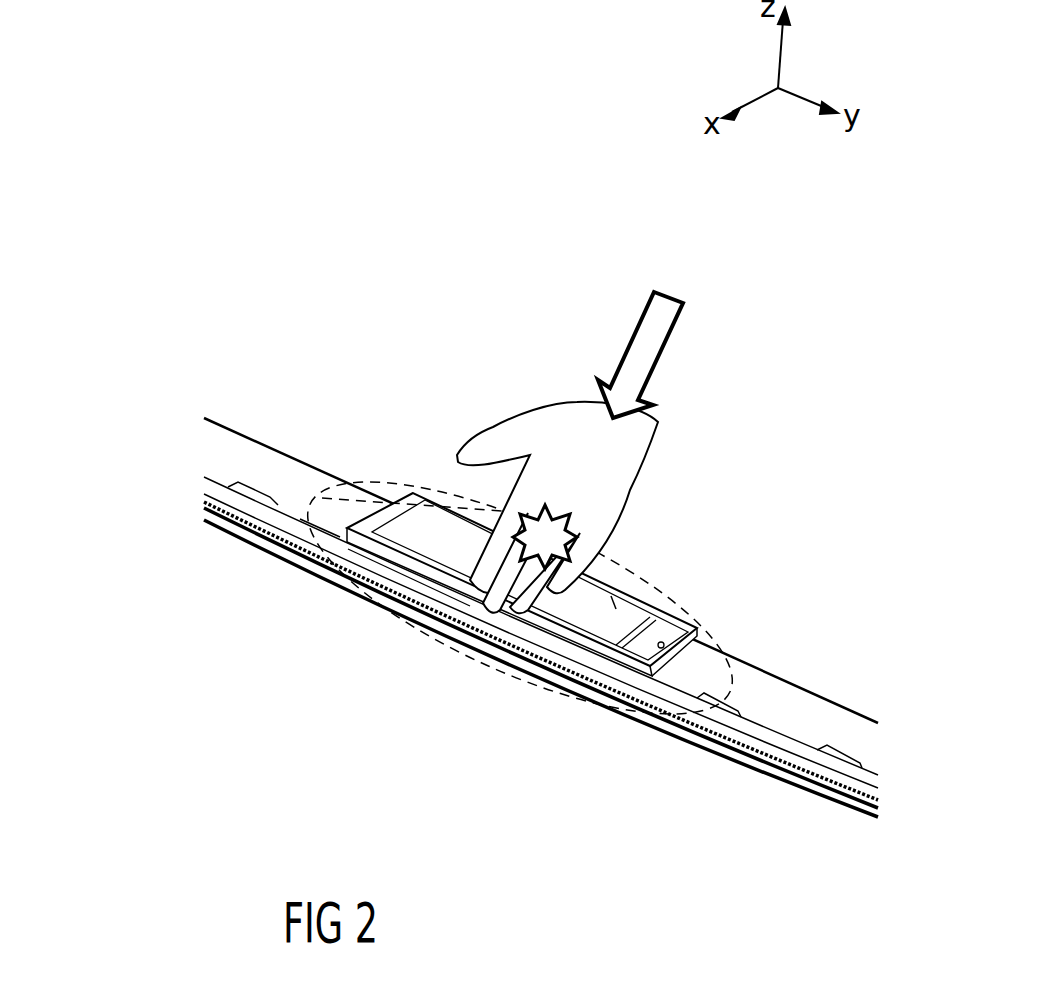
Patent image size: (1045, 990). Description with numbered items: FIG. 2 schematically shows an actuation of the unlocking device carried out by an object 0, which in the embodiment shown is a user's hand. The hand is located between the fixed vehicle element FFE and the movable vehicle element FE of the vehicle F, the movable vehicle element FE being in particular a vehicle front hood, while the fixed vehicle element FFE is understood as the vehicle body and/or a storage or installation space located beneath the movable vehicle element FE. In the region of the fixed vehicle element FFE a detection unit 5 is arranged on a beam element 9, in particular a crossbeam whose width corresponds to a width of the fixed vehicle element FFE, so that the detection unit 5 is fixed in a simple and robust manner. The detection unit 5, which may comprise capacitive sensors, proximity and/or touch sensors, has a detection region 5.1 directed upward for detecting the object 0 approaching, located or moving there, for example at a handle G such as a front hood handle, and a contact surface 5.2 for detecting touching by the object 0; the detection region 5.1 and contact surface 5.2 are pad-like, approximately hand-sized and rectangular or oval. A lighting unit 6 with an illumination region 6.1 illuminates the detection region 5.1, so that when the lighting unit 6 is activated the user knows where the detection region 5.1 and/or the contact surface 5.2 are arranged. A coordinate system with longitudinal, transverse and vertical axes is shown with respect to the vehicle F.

The object 0 is at (653, 459).
The detection unit 5 is at (698, 612).
The detection region 5.1 is at (318, 543).
The contact surface 5.2 is at (448, 550).
The lighting unit 6 is at (567, 522).
The illumination region 6.1 is at (613, 603).
The beam element 9 is at (822, 722).
The vehicle F is at (345, 326).
The movable vehicle element FE is at (215, 344).
The fixed vehicle element FFE is at (177, 556).
The handle G is at (435, 472).